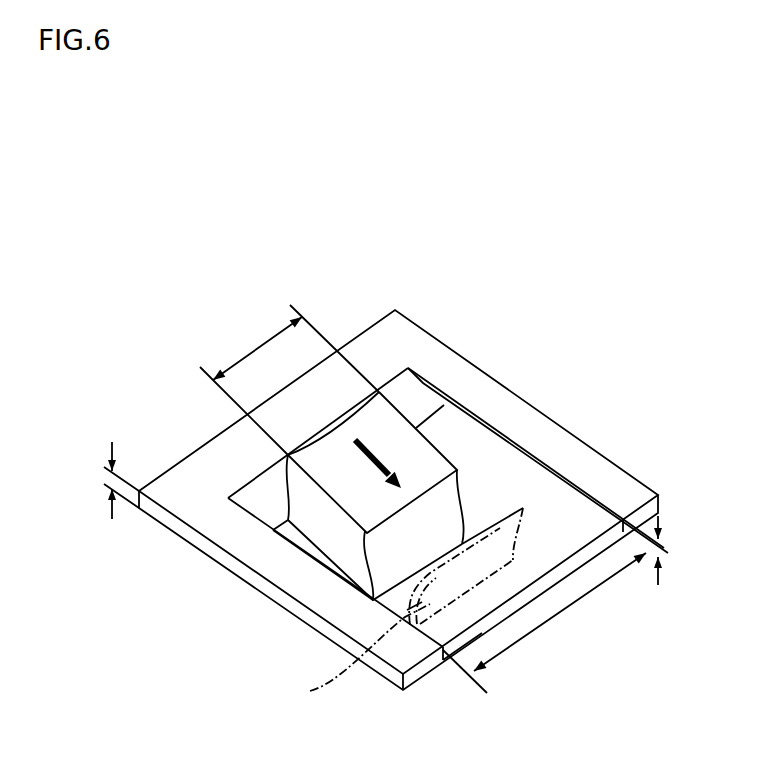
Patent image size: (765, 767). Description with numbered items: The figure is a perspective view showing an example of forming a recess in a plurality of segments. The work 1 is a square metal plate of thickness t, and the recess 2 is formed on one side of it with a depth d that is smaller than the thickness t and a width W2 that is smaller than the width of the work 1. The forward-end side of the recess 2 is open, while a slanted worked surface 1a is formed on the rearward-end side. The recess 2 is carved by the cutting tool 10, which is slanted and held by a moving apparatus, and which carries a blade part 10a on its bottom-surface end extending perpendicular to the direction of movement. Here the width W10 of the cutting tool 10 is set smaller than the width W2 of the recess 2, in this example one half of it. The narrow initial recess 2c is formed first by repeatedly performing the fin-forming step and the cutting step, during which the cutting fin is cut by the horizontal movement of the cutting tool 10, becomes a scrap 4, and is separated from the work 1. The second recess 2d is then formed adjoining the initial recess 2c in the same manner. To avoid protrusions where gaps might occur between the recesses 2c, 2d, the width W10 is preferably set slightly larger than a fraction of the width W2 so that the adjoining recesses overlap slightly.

The work 1 is at (236, 578).
The slanted worked surface 1a is at (422, 393).
The recess 2 is at (483, 427).
The initial recess 2c is at (512, 473).
The second recess 2d is at (442, 627).
The scrap 4 is at (404, 608).
The cutting tool 10 is at (384, 416).
The blade part 10a is at (394, 592).
The width of the cutting tool W10 is at (289, 380).
The width of the recess W2 is at (544, 623).
The thickness t is at (114, 479).
The depth d is at (666, 550).